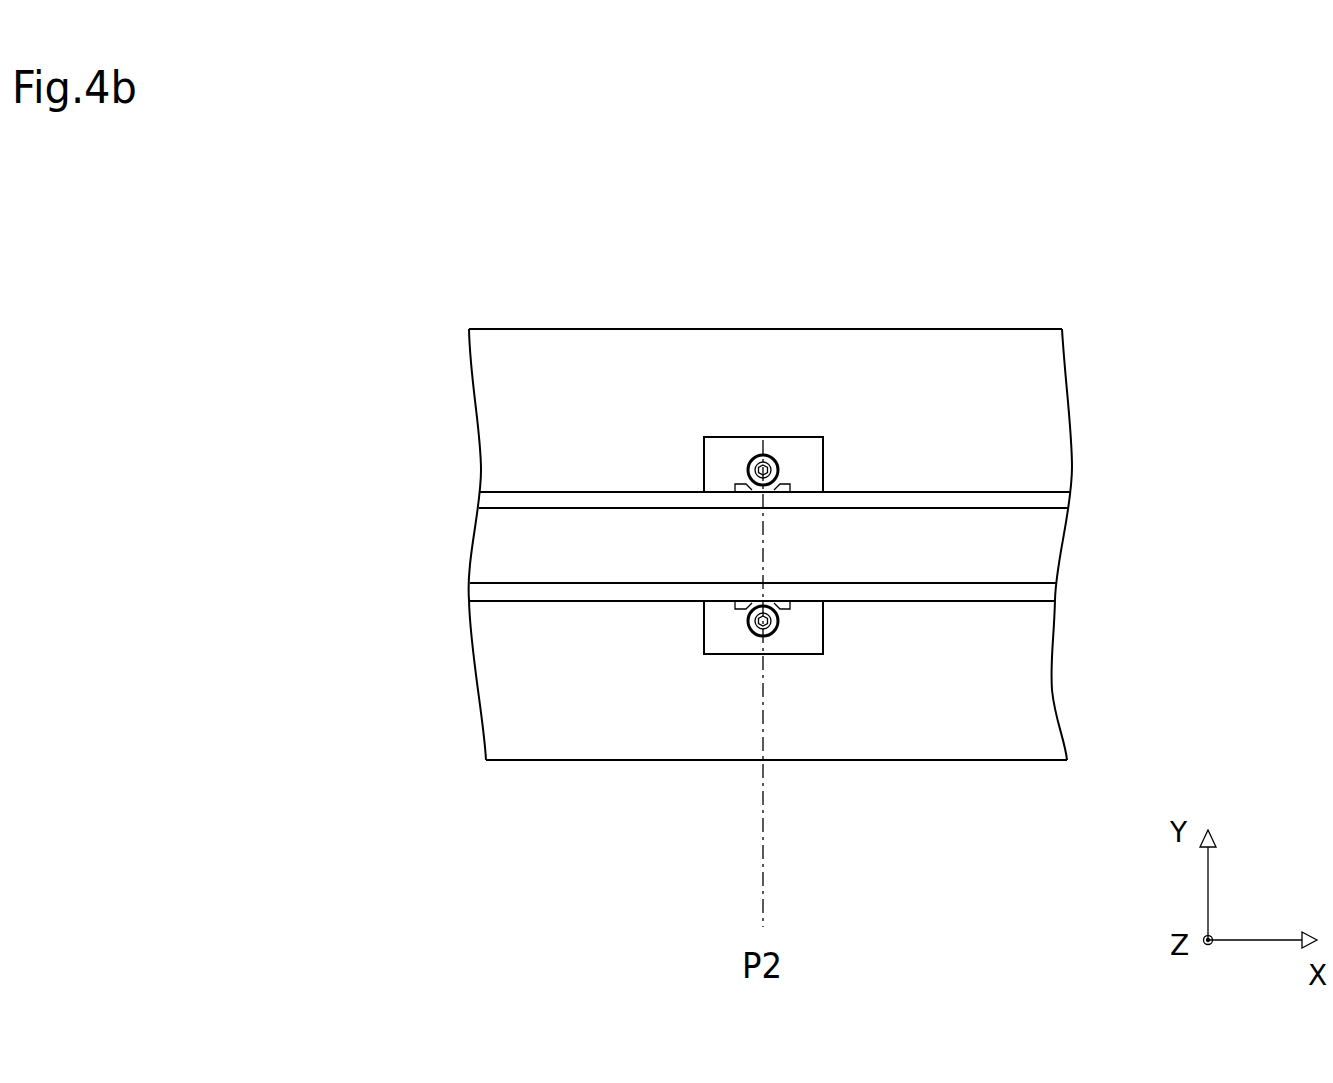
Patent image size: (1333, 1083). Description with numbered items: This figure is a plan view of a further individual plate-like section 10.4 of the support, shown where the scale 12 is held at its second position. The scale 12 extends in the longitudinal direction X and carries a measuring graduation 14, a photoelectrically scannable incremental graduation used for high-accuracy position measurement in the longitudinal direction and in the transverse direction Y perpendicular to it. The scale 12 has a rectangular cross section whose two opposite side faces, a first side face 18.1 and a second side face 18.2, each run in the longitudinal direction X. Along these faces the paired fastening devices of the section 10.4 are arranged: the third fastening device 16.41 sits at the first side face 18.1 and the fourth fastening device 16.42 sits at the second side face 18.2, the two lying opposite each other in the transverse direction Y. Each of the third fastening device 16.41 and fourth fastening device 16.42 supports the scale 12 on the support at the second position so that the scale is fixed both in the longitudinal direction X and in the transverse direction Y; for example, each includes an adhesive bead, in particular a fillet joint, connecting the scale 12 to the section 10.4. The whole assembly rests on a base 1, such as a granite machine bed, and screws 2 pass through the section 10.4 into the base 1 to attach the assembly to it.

The base 1 is at (532, 659).
The screws 2 is at (757, 453).
The section of support 10.4 is at (730, 655).
The scale 12 is at (988, 500).
The measuring graduation 14 is at (1032, 557).
The third fastening device 16.41 is at (790, 605).
The fourth fastening device 16.42 is at (780, 480).
The first side face 18.1 is at (1000, 600).
The second side face 18.2 is at (930, 492).